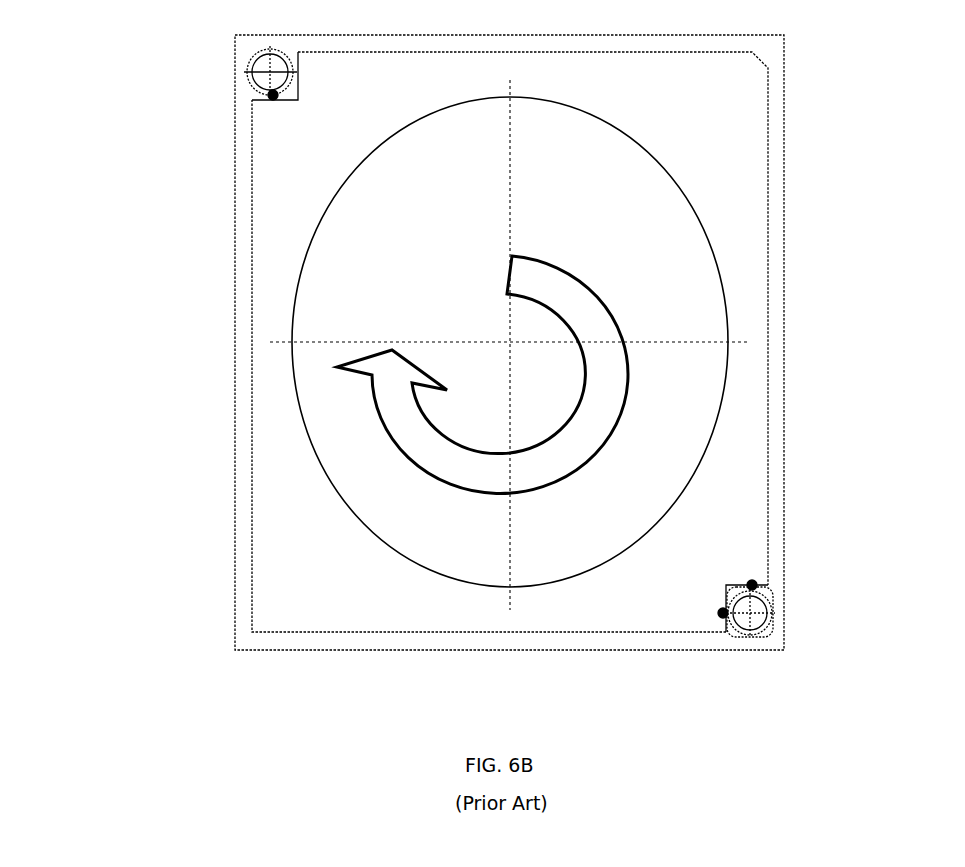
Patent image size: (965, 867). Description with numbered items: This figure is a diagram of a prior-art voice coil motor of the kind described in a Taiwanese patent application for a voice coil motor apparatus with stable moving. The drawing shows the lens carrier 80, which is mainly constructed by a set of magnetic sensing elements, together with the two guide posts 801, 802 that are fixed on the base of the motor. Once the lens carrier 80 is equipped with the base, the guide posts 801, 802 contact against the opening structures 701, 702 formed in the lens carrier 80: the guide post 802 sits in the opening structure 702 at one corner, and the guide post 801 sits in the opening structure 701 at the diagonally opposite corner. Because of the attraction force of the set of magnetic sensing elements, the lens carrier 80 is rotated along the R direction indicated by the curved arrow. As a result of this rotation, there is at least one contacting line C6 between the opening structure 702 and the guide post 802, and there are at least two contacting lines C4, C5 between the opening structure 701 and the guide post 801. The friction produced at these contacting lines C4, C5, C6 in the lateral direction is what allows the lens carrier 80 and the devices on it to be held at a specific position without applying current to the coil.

The lens carrier 80 is at (730, 147).
The guide post 802 is at (258, 60).
The guide post 801 is at (760, 618).
The opening structure 702 is at (240, 102).
The opening structure 701 is at (739, 636).
The contacting line C6 is at (273, 95).
The contacting line C5 is at (723, 613).
The contacting line C4 is at (752, 585).
The R direction R is at (593, 349).